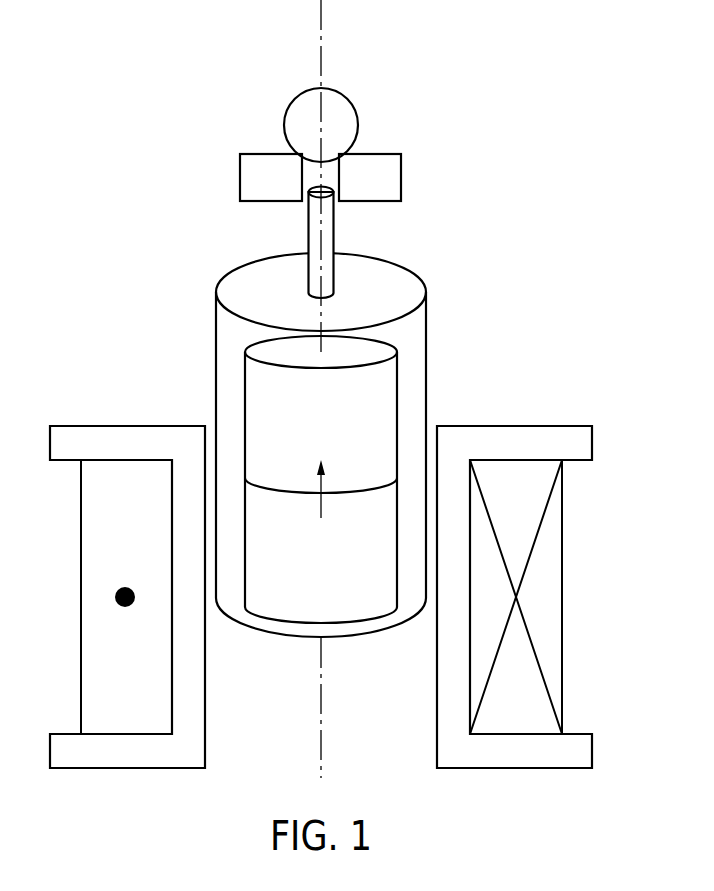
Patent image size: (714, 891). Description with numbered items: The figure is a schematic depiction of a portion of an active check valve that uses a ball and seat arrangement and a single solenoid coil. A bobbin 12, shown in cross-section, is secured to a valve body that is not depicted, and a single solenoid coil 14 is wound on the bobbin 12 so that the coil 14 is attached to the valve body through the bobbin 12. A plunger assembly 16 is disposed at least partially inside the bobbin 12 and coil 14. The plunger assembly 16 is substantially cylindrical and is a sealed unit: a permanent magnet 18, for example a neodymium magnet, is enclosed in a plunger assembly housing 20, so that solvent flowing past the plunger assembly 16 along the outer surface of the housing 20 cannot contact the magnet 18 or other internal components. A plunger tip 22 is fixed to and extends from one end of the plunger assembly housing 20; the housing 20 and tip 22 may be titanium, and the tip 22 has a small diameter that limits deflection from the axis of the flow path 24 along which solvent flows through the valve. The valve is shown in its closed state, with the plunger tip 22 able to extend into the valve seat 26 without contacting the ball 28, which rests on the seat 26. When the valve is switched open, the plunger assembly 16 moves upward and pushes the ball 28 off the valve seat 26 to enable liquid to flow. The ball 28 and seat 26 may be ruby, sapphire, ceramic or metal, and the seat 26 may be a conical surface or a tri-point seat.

The bobbin 12 is at (127, 426).
The solenoid coil 14 is at (81, 683).
The plunger assembly 16 is at (221, 228).
The permanent magnet 18 is at (278, 624).
The plunger assembly housing 20 is at (426, 368).
The plunger tip 22 is at (334, 228).
The flow path 24 is at (322, 20).
The valve seat 26 is at (247, 154).
The ball 28 is at (357, 113).